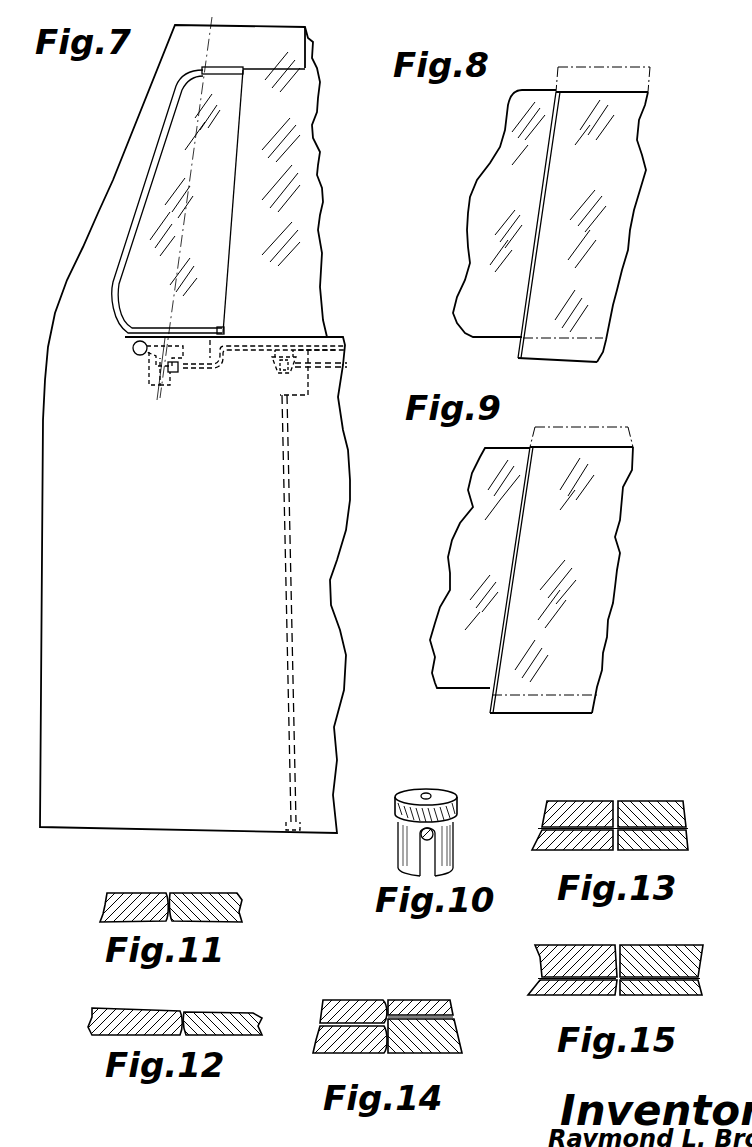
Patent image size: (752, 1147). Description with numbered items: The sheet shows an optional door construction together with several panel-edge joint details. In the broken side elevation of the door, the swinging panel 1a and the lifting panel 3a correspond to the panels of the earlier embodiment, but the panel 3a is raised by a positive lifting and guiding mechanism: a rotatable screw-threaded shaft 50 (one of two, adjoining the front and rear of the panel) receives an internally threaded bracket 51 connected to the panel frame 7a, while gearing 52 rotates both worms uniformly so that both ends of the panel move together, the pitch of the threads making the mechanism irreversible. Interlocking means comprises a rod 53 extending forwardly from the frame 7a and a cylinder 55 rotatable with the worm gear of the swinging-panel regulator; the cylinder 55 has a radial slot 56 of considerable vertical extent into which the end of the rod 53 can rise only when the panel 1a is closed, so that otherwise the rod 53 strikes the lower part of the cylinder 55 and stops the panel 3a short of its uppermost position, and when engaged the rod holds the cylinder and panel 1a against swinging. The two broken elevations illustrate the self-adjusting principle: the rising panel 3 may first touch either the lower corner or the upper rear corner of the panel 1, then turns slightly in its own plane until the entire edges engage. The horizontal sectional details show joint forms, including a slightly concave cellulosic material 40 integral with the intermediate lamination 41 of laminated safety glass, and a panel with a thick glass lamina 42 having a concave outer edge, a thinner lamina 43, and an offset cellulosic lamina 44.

In FIG. 7, the swinging panel 1a is at (157, 198).
In FIG. 7, the panel 3a is at (325, 156).
In FIG. 7, the panel frame 7a is at (253, 346).
In FIG. 7, the screw-threaded shaft 50 is at (290, 638).
In FIG. 7, the internally threaded bracket 51 is at (295, 398).
In FIG. 7, the gearing 52 is at (278, 382).
In FIG. 7, the rod 53 is at (192, 373).
In FIG. 10, the rod 53 is at (436, 834).
In FIG. 7, the cylinder 55 is at (150, 378).
In FIG. 10, the cylinder 55 is at (400, 854).
In FIG. 10, the radial slot 56 is at (433, 858).
In FIG. 8, the panel 1 is at (504, 213).
In FIG. 9, the panel 1 is at (480, 568).
In FIG. 8, the panel 3 is at (646, 117).
In FIG. 9, the panel 3 is at (637, 472).
In FIG. 13, the cellulosic material 40 is at (615, 803).
In FIG. 13, the intermediate lamination 41 is at (688, 829).
In FIG. 14, the thick glass lamina 42 is at (462, 1048).
In FIG. 14, the thinner lamina 43 is at (426, 1004).
In FIG. 14, the cellulosic lamina 44 is at (453, 1017).